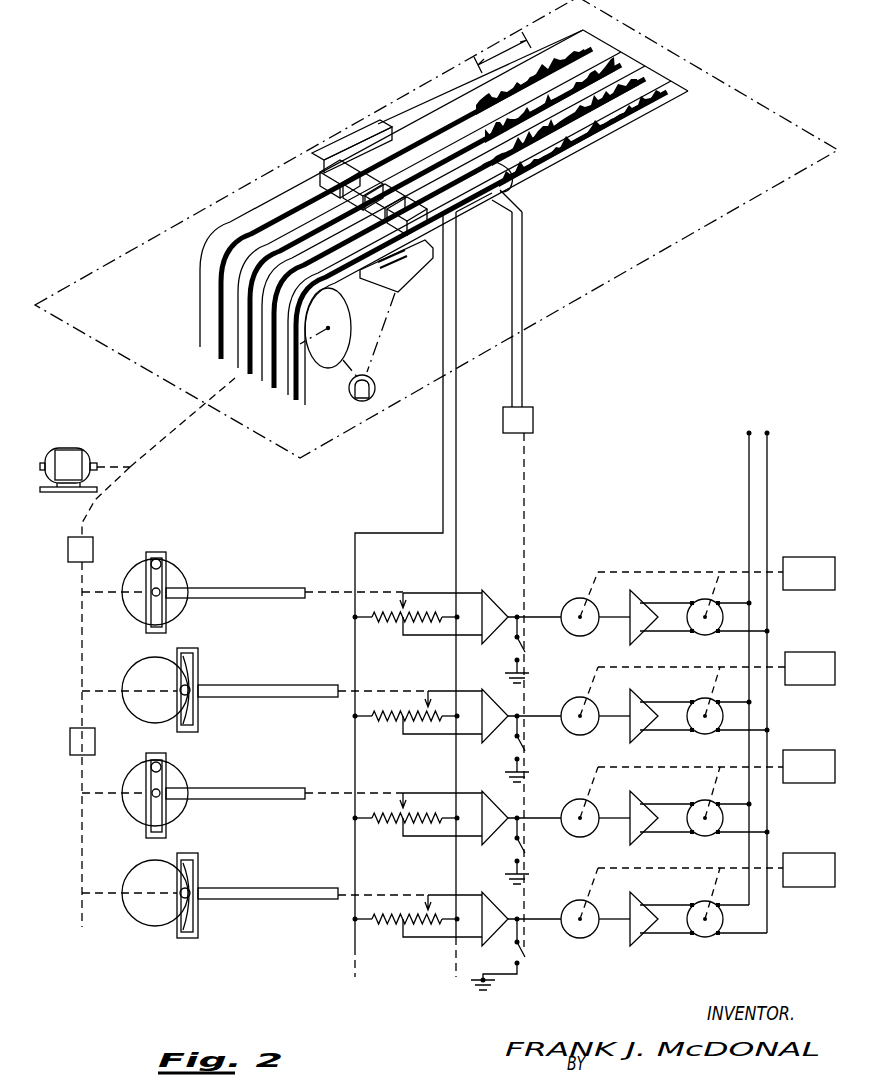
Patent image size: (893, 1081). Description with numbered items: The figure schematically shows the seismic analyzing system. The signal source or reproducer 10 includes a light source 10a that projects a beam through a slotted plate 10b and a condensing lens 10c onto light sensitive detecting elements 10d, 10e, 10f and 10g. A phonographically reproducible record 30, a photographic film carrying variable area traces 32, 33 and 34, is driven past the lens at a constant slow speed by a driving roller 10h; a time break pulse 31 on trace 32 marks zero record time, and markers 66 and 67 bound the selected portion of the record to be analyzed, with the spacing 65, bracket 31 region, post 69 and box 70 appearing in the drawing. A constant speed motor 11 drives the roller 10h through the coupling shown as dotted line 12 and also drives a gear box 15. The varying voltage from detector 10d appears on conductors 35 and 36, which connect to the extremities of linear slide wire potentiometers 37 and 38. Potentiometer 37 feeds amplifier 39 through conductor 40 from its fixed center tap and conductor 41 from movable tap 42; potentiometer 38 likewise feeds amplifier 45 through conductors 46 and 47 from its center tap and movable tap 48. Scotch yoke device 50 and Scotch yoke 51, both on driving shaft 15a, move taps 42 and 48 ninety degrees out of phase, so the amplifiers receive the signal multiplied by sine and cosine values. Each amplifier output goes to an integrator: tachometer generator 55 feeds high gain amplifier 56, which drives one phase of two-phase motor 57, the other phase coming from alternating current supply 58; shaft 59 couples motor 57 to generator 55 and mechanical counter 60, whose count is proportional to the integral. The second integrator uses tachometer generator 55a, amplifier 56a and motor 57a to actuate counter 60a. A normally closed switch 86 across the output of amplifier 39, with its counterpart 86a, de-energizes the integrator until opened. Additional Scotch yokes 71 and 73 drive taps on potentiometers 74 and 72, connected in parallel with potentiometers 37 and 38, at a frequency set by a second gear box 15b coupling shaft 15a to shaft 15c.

The signal source 10 is at (190, 215).
The light source 10a is at (374, 387).
The slotted plate 10b is at (397, 288).
The condensing lens 10c is at (410, 253).
The light sensitive detecting element 10d is at (424, 226).
The light sensitive detecting element 10e is at (405, 208).
The light sensitive detecting element 10f is at (343, 197).
The light sensitive detecting element 10g is at (321, 177).
The driving roller 10h is at (343, 332).
The motor 11 is at (68, 470).
The shaft 12 is at (136, 451).
The gear box 15 is at (86, 551).
The driving shaft 15a is at (82, 650).
The second gear box 15b is at (95, 748).
The shaft 15c is at (82, 847).
The phonographically reproducible record 30 is at (197, 296).
The time break pulse 31 is at (512, 187).
The trace 32 is at (281, 393).
The trace 33 is at (226, 386).
The trace 34 is at (233, 360).
The conductor 35 is at (443, 436).
The conductor 36 is at (457, 436).
The linear slide wire potentiometer 37 is at (442, 585).
The linear slide wire potentiometer 38 is at (444, 689).
The amplifier 39 is at (513, 601).
The conductor 40 is at (427, 636).
The second conductor 41 is at (486, 578).
The movable tap 42 is at (402, 603).
The amplifier 45 is at (485, 742).
The first conductor 46 is at (430, 736).
The second conductor 47 is at (484, 678).
The movable tap 48 is at (427, 702).
The Scotch yoke device 50 is at (250, 568).
The Scotch yoke 51 is at (248, 668).
The tachometer generator 55 is at (580, 598).
The tachometer generator 55a is at (581, 698).
The high gain amplifier 56 is at (633, 600).
The amplifier 56a is at (634, 736).
The two-phase motor 57 is at (710, 600).
The motor 57a is at (710, 735).
The alternating current supply circuit 58 is at (756, 477).
The shaft 59 is at (686, 553).
The mechanical counter 60 is at (757, 434).
The counter 60a is at (810, 668).
The spacing 65 is at (502, 52).
The marker 66 is at (500, 80).
The marker 67 is at (553, 60).
The support post 69 is at (533, 268).
The control box 70 is at (518, 677).
The Scotch yoke 71 is at (248, 769).
The potentiometer 72 is at (430, 888).
The Scotch yoke 73 is at (258, 872).
The potentiometer 74 is at (422, 787).
The switch 86 is at (524, 649).
The ground switch 86a is at (525, 748).